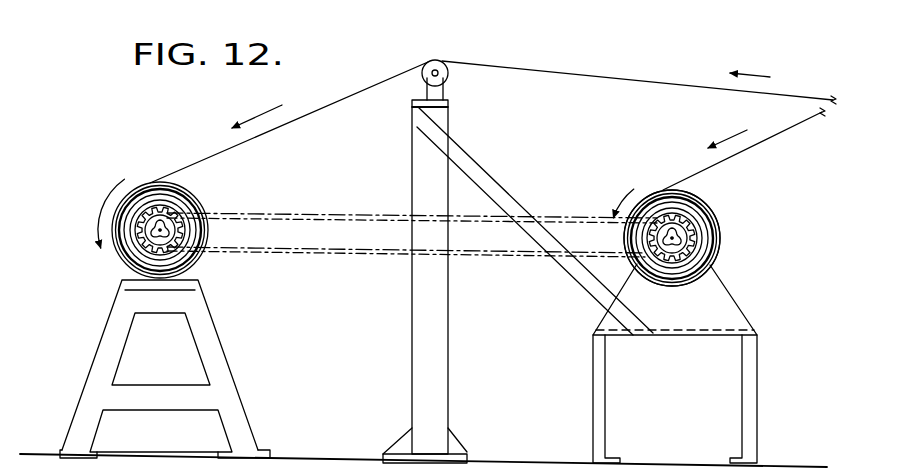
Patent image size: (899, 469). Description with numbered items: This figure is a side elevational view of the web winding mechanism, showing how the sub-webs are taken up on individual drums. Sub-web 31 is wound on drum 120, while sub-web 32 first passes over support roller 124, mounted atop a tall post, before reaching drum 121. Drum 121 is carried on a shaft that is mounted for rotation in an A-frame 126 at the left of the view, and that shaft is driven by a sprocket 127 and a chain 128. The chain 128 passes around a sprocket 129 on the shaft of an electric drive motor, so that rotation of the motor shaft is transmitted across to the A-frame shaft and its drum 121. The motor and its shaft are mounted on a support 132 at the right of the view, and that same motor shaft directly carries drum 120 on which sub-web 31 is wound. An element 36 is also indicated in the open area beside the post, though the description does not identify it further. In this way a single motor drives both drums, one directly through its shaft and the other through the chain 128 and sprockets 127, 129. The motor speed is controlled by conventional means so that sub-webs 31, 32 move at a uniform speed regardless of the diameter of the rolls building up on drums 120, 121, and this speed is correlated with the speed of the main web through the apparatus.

The sub-web 31 is at (788, 128).
The sub-web 32 is at (699, 90).
The tower frame 36 is at (551, 145).
The drum 120 is at (720, 252).
The drum 121 is at (153, 197).
The support roller 124 is at (452, 77).
The A-frame 126 is at (217, 330).
The sprocket 127 is at (108, 255).
The chain 128 is at (415, 215).
The sprocket 129 is at (718, 213).
The support 132 is at (730, 302).